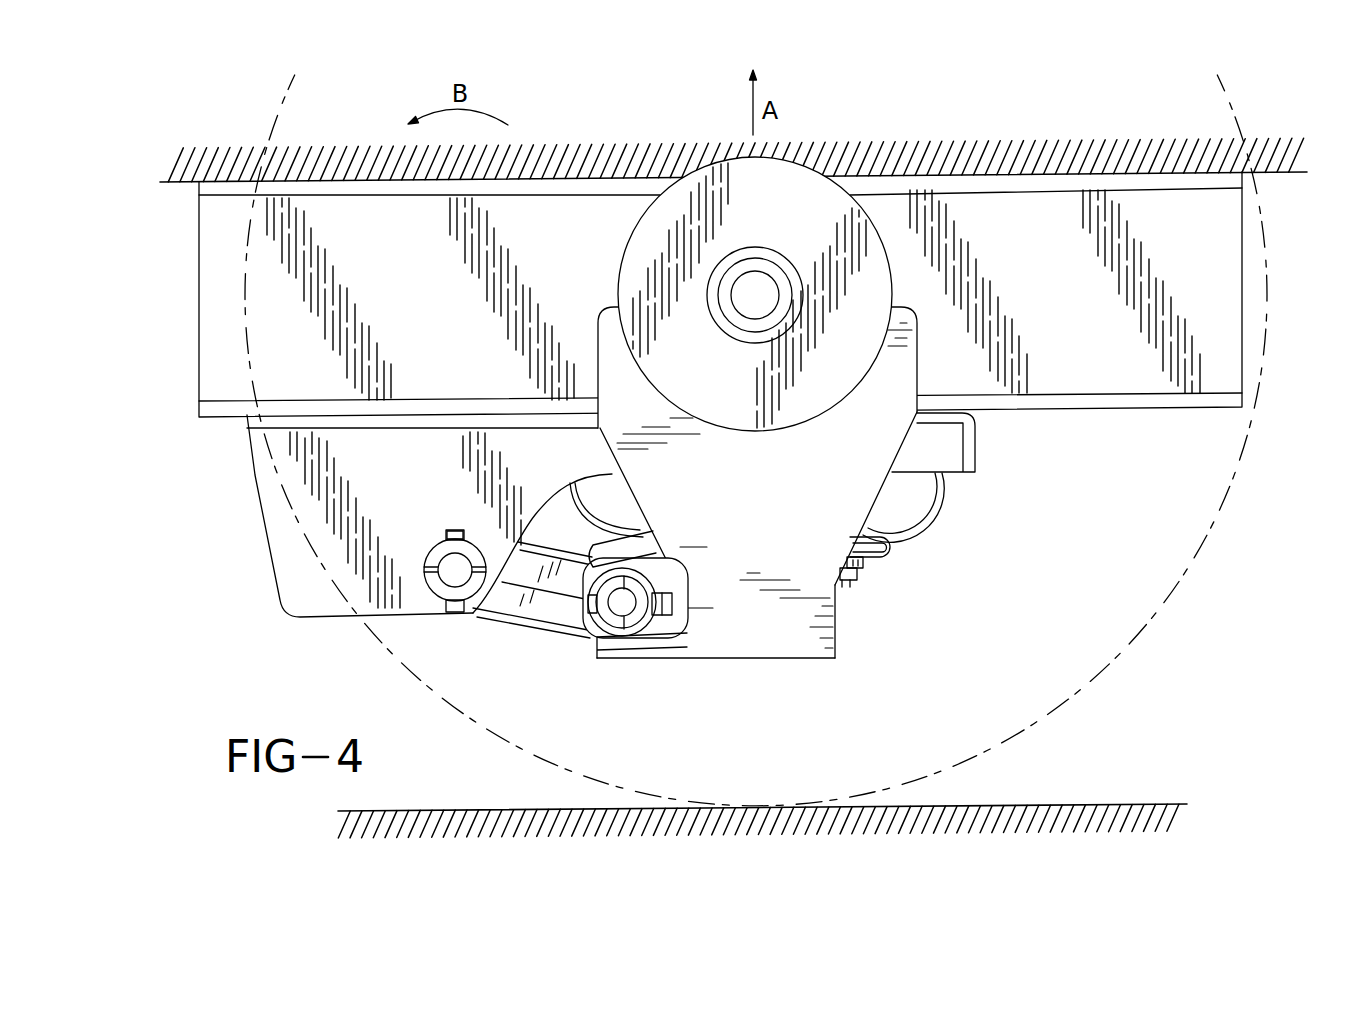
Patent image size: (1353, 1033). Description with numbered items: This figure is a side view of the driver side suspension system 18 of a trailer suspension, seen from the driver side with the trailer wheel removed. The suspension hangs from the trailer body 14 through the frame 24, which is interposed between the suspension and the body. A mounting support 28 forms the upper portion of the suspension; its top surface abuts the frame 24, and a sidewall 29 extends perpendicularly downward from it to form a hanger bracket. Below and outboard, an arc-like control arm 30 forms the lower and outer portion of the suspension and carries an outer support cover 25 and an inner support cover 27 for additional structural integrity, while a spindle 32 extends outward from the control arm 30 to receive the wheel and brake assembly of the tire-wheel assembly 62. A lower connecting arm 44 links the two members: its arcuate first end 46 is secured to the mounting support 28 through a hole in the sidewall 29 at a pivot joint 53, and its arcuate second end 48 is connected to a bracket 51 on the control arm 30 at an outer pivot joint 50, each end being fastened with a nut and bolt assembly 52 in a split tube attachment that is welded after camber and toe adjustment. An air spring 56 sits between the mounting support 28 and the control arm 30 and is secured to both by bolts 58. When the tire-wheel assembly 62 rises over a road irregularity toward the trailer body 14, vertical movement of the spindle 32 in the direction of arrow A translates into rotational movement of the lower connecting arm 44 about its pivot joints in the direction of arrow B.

The trailer body 14 is at (1285, 176).
The driver side suspension system 18 is at (952, 583).
The frame 24 is at (1122, 362).
The outer support cover 25 is at (767, 650).
The inner support cover 27 is at (633, 540).
The mounting support 28 is at (980, 448).
The sidewall 29 is at (293, 560).
The control arm 30 is at (806, 666).
The spindle 32 is at (757, 282).
The lower connecting arm 44 is at (537, 632).
The first end 46 is at (480, 617).
The second end 48 is at (582, 647).
The outer pivot joint 50 is at (645, 565).
The bracket 51 is at (672, 622).
The nut and bolt assembly 52 is at (421, 556).
The pivot joint 53 is at (434, 533).
The air spring 56 is at (900, 508).
The bolts 58 is at (852, 582).
The tire-wheel assembly 62 is at (1083, 692).